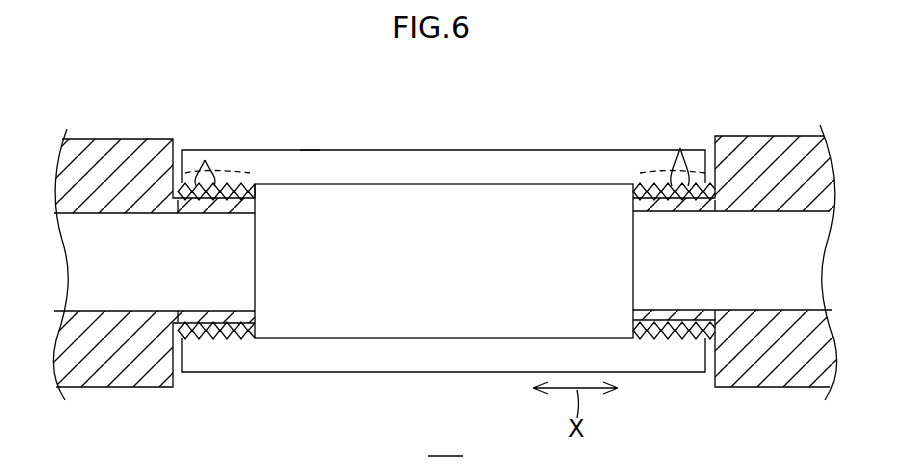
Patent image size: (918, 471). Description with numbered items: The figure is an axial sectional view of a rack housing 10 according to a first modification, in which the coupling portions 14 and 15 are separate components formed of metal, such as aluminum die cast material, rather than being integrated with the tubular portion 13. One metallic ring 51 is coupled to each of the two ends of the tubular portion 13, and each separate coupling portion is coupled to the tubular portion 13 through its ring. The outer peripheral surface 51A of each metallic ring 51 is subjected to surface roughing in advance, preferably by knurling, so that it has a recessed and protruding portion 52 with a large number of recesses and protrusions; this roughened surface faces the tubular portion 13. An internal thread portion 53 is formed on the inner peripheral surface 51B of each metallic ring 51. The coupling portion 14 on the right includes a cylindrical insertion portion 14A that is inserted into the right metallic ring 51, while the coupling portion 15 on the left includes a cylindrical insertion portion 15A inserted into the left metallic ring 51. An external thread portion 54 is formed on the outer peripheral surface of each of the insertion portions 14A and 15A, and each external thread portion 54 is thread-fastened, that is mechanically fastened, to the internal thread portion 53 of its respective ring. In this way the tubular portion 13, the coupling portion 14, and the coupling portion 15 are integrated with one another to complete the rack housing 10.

The rack housing 10 is at (445, 444).
The tubular portion 13 is at (443, 150).
The coupling portion 14 is at (767, 387).
The cylindrical insertion portion 14A is at (698, 211).
The coupling portion 15 is at (129, 387).
The cylindrical insertion portion 15A is at (189, 213).
The metallic ring 51 is at (257, 187).
The outer peripheral surface 51A is at (233, 181).
The inner peripheral surface 51B is at (242, 323).
The recessed and protruding portion 52 is at (205, 160).
The internal thread portion 53 is at (228, 205).
The external thread portion 54 is at (210, 340).